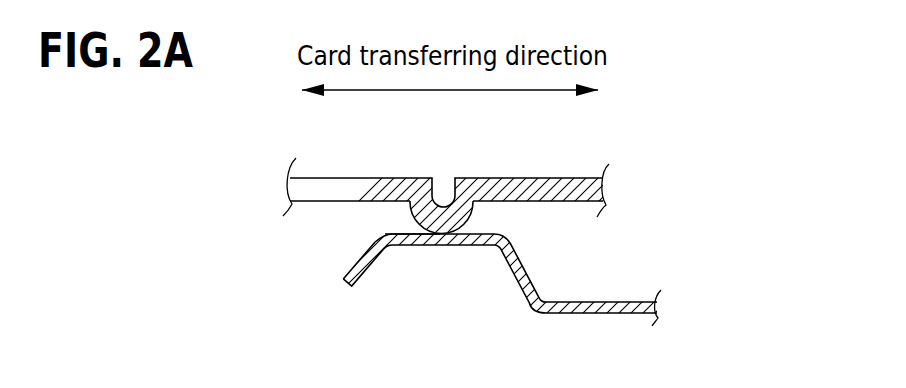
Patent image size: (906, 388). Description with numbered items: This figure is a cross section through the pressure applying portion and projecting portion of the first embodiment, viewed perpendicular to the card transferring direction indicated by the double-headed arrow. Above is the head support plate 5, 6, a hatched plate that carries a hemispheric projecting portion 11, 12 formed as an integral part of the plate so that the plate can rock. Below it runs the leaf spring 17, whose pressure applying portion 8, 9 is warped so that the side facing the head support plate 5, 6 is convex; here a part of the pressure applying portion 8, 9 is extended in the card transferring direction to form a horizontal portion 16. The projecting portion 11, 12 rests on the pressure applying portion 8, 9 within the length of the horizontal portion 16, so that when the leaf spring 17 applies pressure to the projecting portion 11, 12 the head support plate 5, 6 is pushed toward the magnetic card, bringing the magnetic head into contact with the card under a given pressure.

The head support plate 5 is at (542, 232).
The head support plate 6 is at (523, 180).
The projecting portion 11 is at (507, 226).
The projecting portion 12 is at (472, 212).
The pressure applying portion 8 is at (542, 257).
The pressure applying portion 9 is at (389, 292).
The horizontal portion 16 is at (396, 233).
The leaf spring 17 is at (585, 304).